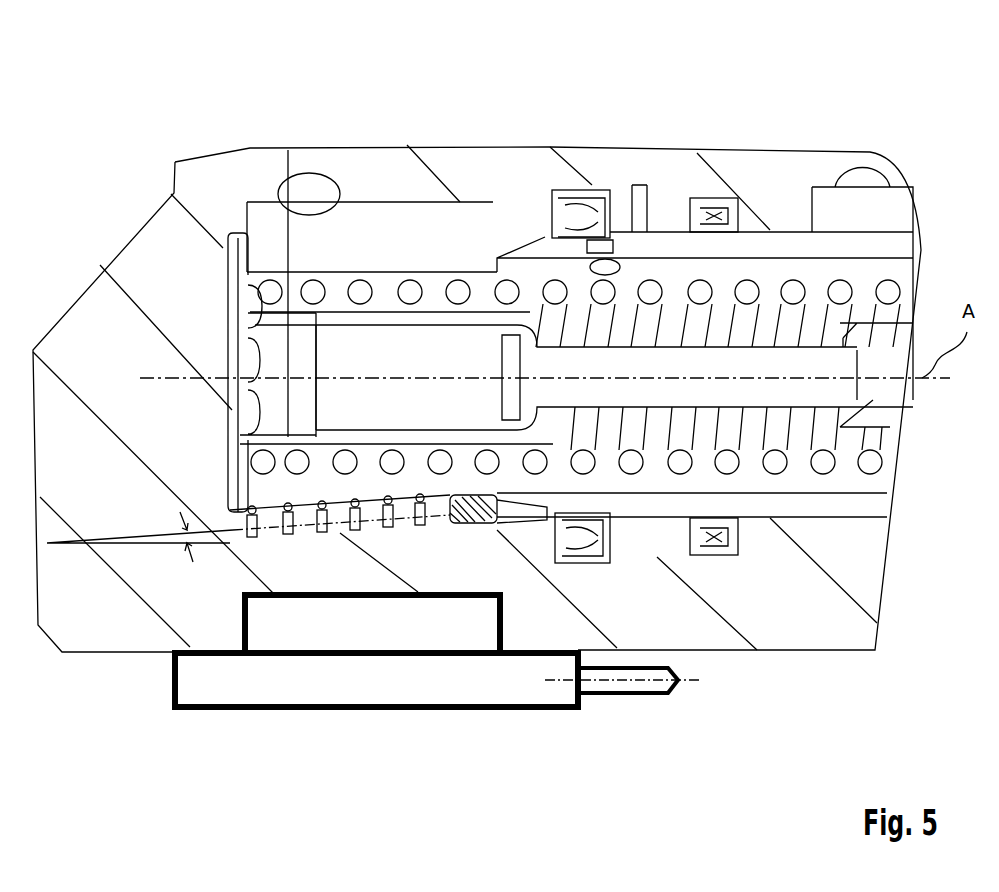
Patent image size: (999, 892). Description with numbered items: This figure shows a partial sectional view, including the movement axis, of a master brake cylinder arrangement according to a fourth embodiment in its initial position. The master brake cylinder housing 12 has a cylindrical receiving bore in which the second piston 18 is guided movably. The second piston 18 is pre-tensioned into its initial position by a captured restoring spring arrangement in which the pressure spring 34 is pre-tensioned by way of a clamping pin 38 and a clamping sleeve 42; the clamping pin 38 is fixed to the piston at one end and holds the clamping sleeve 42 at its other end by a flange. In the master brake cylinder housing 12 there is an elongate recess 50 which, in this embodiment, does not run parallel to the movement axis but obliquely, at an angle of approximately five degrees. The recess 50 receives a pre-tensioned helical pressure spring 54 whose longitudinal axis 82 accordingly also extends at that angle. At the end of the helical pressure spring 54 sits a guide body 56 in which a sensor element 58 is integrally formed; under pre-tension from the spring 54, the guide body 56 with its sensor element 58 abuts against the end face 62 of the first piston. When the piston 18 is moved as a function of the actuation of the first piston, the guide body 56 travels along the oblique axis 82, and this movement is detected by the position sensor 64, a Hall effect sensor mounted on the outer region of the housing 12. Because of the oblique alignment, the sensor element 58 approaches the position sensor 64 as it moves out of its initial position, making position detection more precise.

The master brake cylinder housing 12 is at (342, 173).
The clamping sleeve 42 is at (290, 170).
The end face 62 is at (497, 257).
The clamping pin 38 is at (550, 363).
The pressure spring 34 is at (647, 280).
The second piston 18 is at (668, 258).
The longitudinal axis 82 is at (270, 527).
The helical pressure spring 54 is at (322, 527).
The recess 50 is at (330, 527).
The position sensor 64 is at (380, 677).
The guide body 56 is at (455, 523).
The sensor element 58 is at (480, 523).